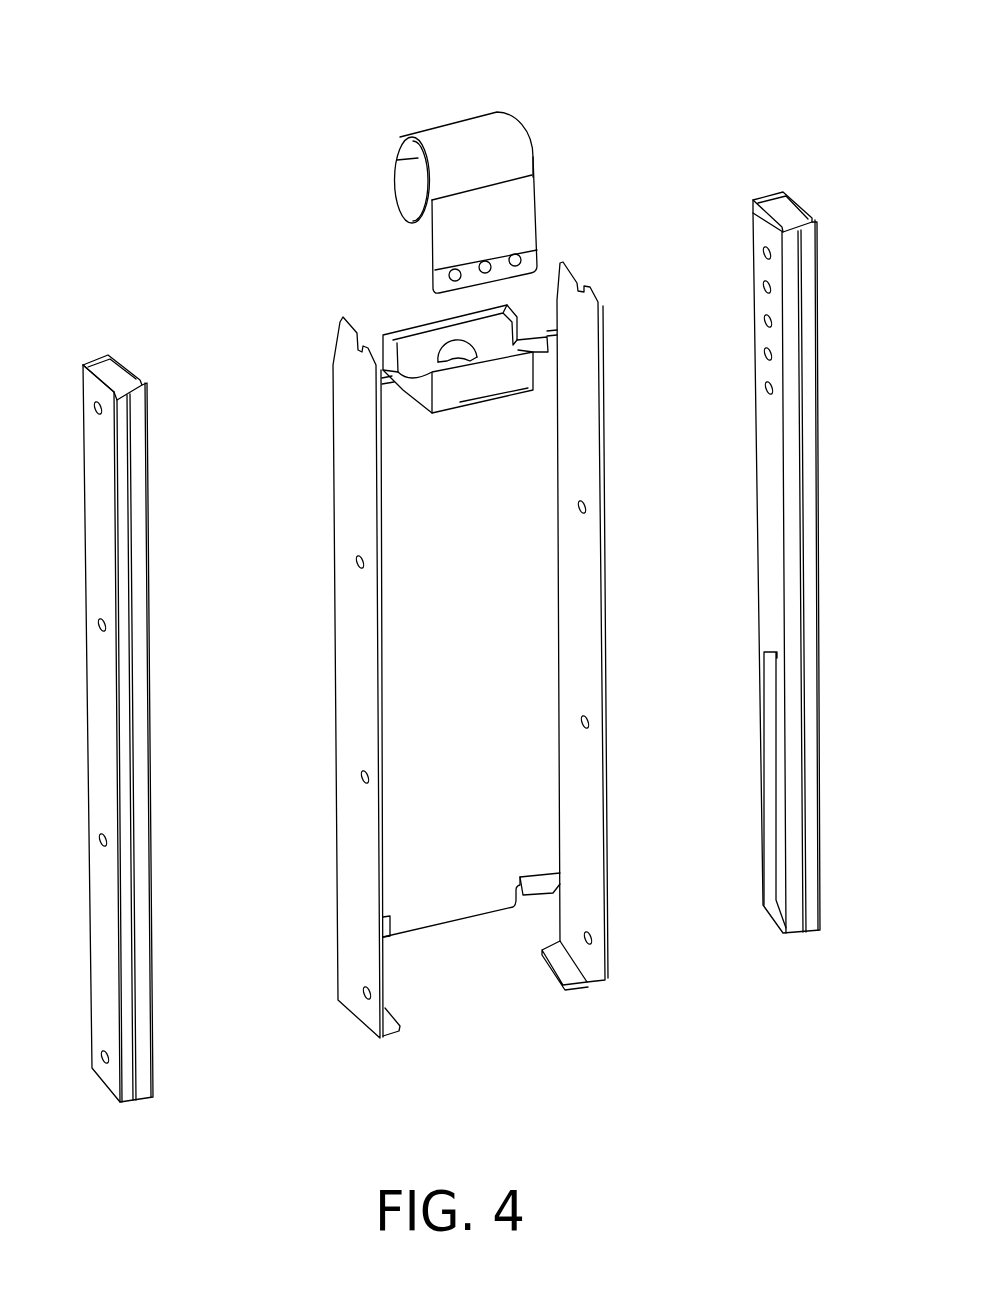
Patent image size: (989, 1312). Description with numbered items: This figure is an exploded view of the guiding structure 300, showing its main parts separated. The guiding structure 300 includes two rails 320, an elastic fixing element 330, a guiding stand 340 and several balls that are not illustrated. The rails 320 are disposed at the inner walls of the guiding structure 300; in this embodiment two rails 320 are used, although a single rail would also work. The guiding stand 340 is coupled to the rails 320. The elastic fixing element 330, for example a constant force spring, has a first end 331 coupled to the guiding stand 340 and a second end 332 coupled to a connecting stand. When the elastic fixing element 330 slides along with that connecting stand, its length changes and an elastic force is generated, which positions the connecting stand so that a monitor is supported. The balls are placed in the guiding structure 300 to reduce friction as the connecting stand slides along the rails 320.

The guiding structure 300 is at (85, 32).
The rails 320 is at (97, 783).
The elastic fixing element 330 is at (512, 146).
The first end 331 is at (395, 173).
The second end 332 is at (522, 227).
The guiding stand 340 is at (480, 387).